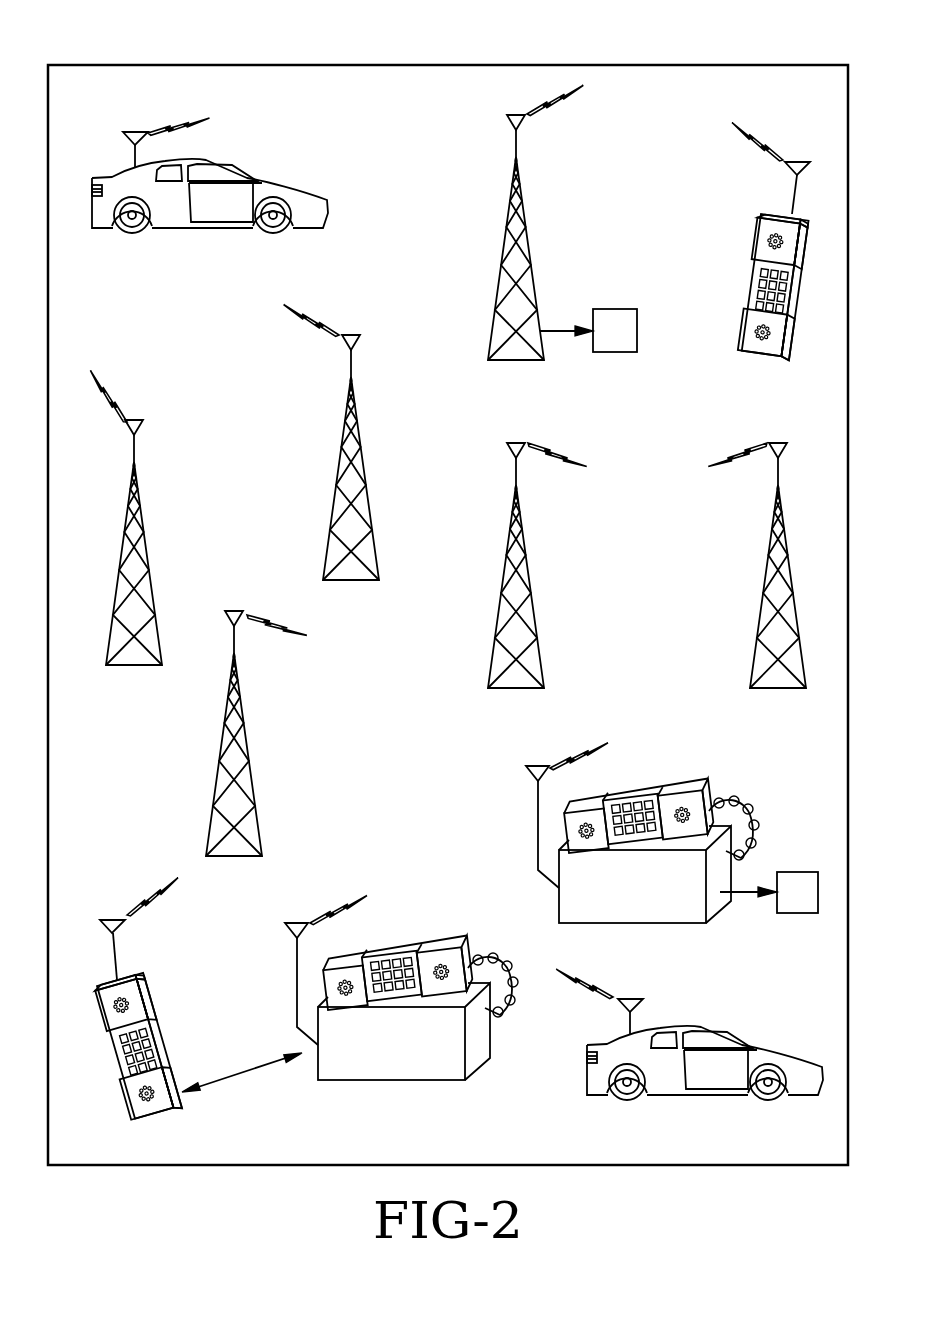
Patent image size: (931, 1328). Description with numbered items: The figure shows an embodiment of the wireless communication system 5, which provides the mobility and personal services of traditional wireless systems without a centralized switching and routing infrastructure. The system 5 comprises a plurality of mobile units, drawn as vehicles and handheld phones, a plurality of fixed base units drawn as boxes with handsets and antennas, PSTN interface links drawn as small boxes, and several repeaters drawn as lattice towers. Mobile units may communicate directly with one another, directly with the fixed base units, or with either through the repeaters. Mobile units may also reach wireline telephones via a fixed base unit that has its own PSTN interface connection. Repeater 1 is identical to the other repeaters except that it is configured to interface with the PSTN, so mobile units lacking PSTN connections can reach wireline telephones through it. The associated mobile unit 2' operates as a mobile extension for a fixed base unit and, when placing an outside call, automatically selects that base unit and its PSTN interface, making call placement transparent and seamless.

The system 5 is at (448, 85).
The repeater 1 is at (537, 240).
The associated mobile unit 2' is at (197, 1014).